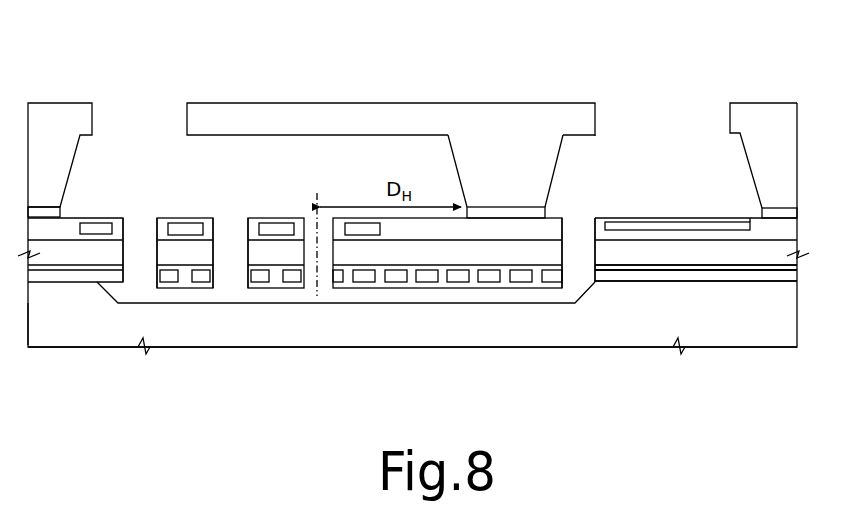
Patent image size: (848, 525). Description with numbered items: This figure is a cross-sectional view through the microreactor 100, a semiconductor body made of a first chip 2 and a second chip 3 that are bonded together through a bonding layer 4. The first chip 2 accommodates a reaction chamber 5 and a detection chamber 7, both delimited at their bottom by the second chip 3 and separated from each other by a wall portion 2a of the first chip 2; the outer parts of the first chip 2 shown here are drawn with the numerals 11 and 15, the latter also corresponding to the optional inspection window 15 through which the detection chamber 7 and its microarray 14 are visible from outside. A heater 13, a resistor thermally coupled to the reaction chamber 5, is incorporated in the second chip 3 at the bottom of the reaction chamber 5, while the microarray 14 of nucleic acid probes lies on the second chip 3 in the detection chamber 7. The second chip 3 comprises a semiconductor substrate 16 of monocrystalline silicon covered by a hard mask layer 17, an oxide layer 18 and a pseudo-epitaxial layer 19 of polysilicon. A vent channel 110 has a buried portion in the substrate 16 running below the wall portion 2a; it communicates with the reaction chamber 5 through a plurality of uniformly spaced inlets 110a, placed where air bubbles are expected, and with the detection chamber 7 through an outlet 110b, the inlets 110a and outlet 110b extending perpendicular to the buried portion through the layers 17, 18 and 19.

The microreactor 100 is at (667, 62).
The first chip 2 is at (803, 165).
The wall portion 2a is at (508, 185).
The second chip 3 is at (100, 352).
The bonding layer 4 is at (62, 212).
The reaction chamber 5 is at (262, 156).
The detection chamber 7 is at (637, 166).
The left cap portion 11 is at (138, 115).
The heater 13 is at (97, 226).
The microarray 14 is at (667, 220).
The inspection window 15 is at (697, 115).
The semiconductor substrate 16 is at (64, 335).
The hard mask layer 17 is at (608, 278).
The oxide layer 18 is at (662, 267).
The pseudo-epitaxial layer 19 is at (473, 258).
The vent channel 110 is at (415, 293).
The inlet 110a is at (143, 230).
The outlet 110b is at (575, 228).